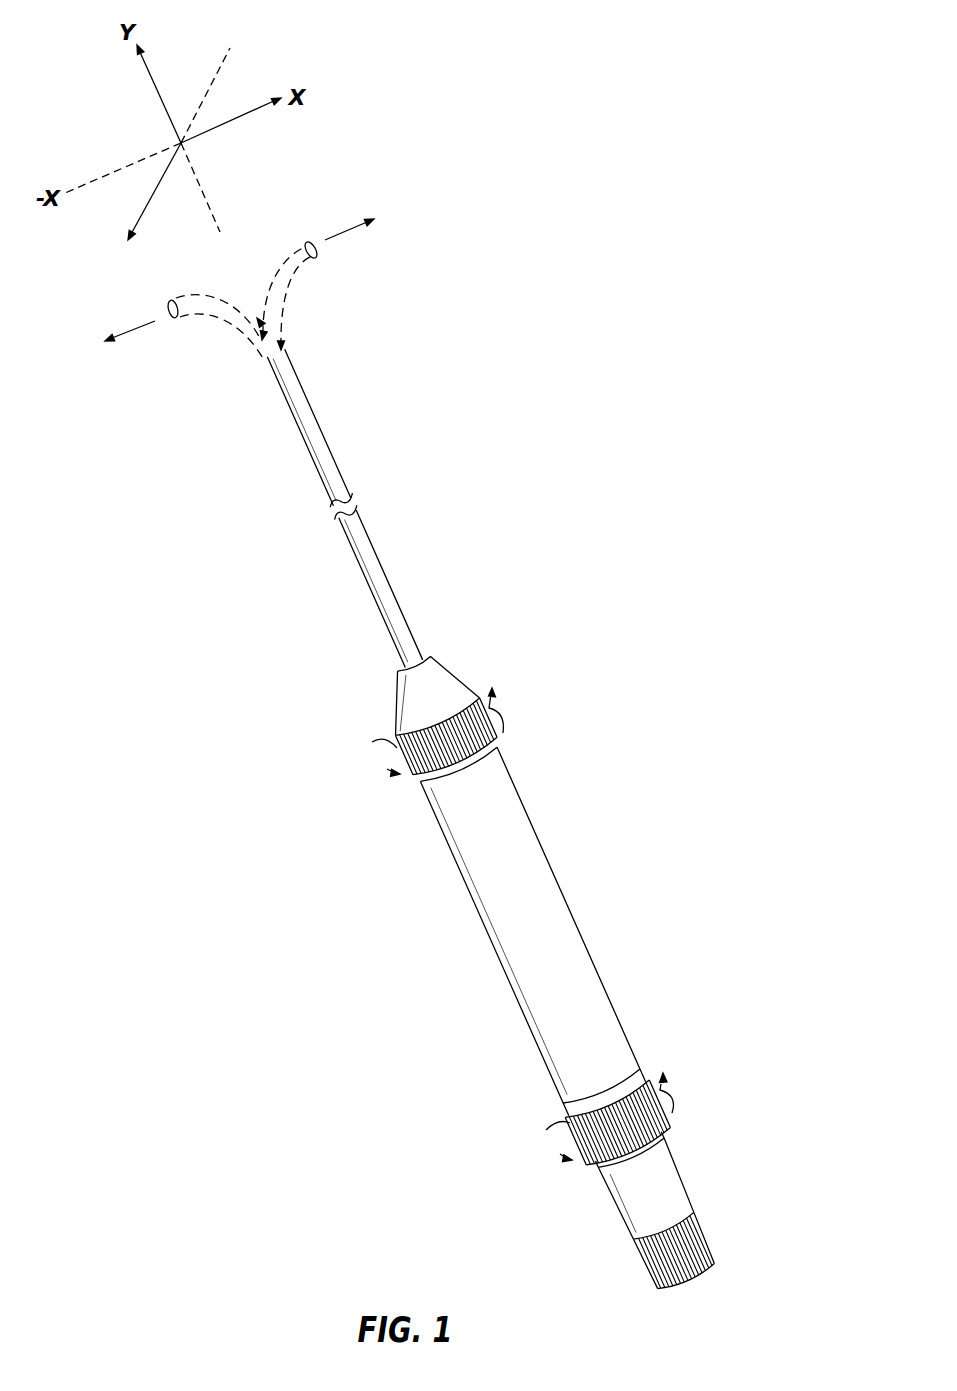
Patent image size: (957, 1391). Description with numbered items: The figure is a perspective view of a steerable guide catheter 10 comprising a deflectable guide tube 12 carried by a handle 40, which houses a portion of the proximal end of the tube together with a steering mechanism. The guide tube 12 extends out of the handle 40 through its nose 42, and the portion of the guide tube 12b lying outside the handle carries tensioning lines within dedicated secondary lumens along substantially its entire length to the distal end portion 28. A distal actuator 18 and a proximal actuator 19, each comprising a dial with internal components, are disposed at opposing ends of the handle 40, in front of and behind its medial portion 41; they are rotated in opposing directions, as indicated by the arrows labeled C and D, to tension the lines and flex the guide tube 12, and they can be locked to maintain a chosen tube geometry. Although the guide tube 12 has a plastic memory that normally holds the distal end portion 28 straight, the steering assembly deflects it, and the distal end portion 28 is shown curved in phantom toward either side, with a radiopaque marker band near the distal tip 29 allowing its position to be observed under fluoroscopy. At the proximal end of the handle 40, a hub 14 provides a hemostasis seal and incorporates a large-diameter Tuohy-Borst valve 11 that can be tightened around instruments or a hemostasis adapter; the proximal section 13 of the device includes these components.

The steerable guide catheter 10 is at (712, 680).
The Tuohy-Borst valve 11 is at (705, 1236).
The deflectable guide tube 12 is at (318, 548).
The guide tube outside the handle 12b is at (311, 428).
The proximal section 13 is at (560, 1200).
The hub 14 is at (668, 1182).
The distal actuator 18 is at (492, 721).
The proximal actuator 19 is at (656, 1103).
The distal end portion 28 is at (200, 330).
The distal tip 29 is at (310, 242).
The handle 40 is at (388, 978).
The medial portion 41 is at (553, 913).
The nose 42 is at (443, 662).